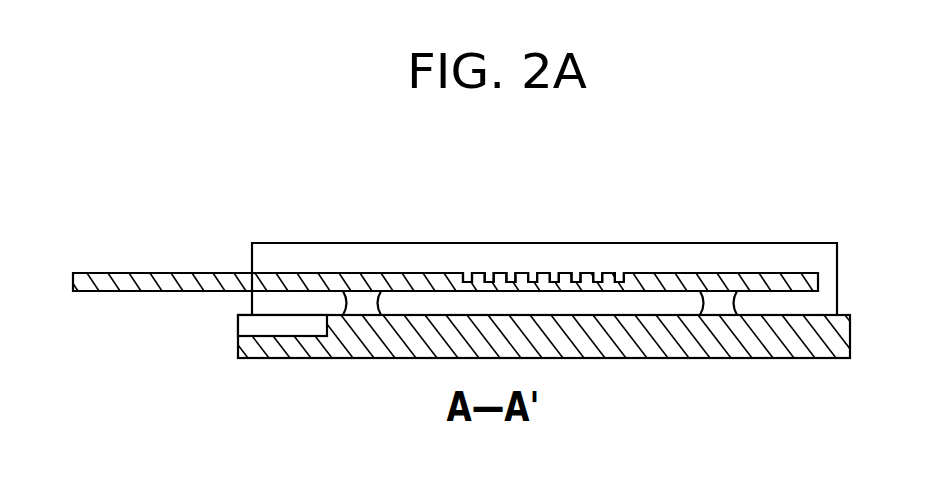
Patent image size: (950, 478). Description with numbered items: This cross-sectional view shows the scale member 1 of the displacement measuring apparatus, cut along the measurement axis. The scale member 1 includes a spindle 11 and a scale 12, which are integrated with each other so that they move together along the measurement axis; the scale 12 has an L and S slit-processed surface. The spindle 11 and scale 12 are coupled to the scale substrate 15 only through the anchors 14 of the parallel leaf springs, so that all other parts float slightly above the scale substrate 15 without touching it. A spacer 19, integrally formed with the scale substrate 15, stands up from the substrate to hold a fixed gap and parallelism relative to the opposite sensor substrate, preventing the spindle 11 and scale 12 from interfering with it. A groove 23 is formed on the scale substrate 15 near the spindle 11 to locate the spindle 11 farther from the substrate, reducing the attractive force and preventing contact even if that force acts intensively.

The scale member 1 is at (849, 256).
The spindle 11 is at (163, 276).
The scale 12 is at (535, 278).
The anchors 14 is at (720, 305).
The scale substrate 15 is at (850, 336).
The spacer 19 is at (336, 258).
The groove 23 is at (238, 325).